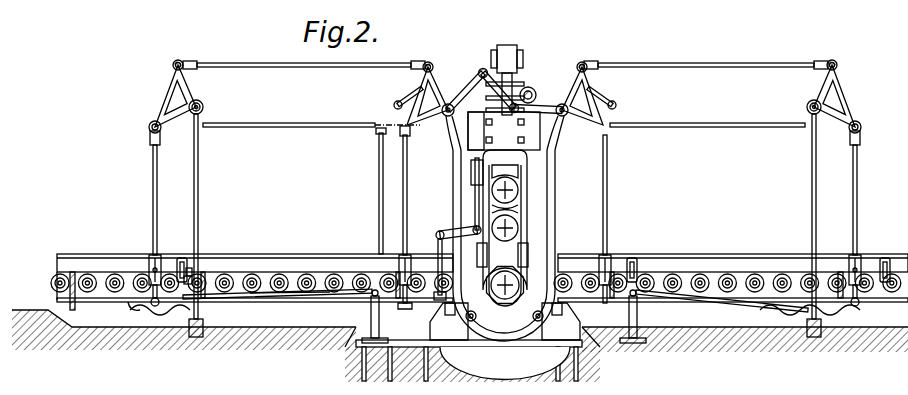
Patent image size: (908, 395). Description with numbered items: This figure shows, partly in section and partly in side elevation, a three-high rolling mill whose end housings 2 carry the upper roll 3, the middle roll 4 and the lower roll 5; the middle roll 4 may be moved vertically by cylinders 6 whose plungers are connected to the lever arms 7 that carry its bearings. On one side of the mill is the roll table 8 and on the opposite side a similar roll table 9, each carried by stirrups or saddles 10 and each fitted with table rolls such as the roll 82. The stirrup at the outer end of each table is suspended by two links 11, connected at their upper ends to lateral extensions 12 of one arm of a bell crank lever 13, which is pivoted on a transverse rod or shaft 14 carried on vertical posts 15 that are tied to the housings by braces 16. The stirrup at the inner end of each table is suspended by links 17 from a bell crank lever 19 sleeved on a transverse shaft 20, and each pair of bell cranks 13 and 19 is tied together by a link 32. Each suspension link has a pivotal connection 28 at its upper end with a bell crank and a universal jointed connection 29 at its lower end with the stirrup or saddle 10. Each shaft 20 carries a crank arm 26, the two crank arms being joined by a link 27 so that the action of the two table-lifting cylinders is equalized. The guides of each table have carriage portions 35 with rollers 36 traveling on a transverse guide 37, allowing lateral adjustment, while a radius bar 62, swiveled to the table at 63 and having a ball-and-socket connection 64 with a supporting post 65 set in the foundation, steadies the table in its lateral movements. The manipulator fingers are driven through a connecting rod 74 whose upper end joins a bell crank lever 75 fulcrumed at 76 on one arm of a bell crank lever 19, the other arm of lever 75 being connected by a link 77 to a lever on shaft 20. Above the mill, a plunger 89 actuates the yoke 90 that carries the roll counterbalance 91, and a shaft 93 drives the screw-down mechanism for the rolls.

The end housings 2 is at (555, 207).
The upper roll 3 is at (518, 190).
The middle roll 4 is at (518, 228).
The lower roll 5 is at (507, 271).
The cylinders 6 is at (470, 140).
The lever arms 7 is at (450, 232).
The roll table 8 is at (270, 254).
The roll table 9 is at (718, 254).
The stirrups or saddles 10 is at (155, 307).
The links 11 is at (153, 187).
The lateral extensions 12 is at (148, 128).
The bell crank lever 13 is at (170, 88).
The transverse rod or shaft 14 is at (204, 108).
The vertical posts 15 is at (198, 187).
The braces 16 is at (322, 127).
The links 17 is at (407, 187).
The bell crank lever 19 is at (436, 66).
The transverse shaft 20 is at (445, 118).
The crank arm 26 is at (469, 84).
The link 27 is at (512, 92).
The pivotal connection 28 is at (150, 138).
The universal jointed connection 29 is at (150, 256).
The link 32 is at (243, 63).
The carriage portions 35 is at (182, 258).
The rollers 36 is at (191, 270).
The transverse guide 37 is at (193, 277).
The radius bar 62 is at (270, 298).
The swivel connection 63 is at (190, 323).
The ball-and-socket connection 64 is at (372, 296).
The supporting post 65 is at (371, 323).
The connecting rod 74 is at (379, 187).
The bell crank lever 75 is at (394, 105).
The fulcrum 76 is at (401, 136).
The link 77 is at (412, 95).
The table roll 82 is at (303, 300).
The plunger 89 is at (506, 45).
The yoke 90 is at (523, 55).
The roll counterbalance 91 is at (518, 74).
The shaft 93 is at (537, 94).